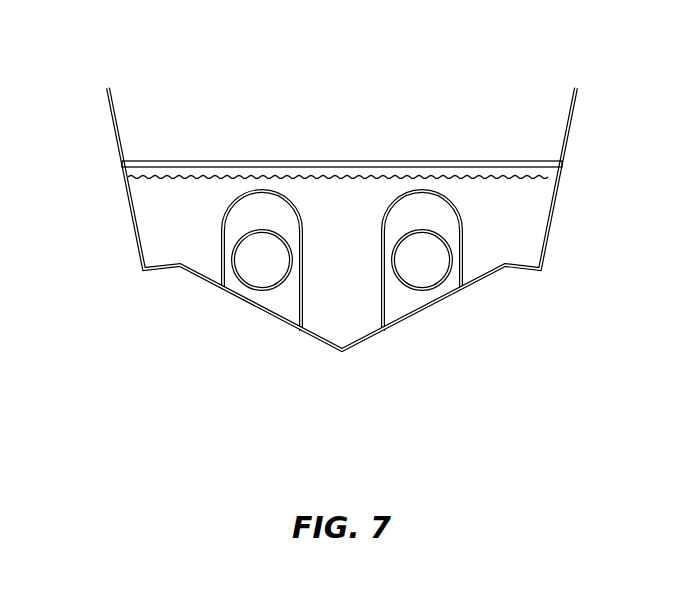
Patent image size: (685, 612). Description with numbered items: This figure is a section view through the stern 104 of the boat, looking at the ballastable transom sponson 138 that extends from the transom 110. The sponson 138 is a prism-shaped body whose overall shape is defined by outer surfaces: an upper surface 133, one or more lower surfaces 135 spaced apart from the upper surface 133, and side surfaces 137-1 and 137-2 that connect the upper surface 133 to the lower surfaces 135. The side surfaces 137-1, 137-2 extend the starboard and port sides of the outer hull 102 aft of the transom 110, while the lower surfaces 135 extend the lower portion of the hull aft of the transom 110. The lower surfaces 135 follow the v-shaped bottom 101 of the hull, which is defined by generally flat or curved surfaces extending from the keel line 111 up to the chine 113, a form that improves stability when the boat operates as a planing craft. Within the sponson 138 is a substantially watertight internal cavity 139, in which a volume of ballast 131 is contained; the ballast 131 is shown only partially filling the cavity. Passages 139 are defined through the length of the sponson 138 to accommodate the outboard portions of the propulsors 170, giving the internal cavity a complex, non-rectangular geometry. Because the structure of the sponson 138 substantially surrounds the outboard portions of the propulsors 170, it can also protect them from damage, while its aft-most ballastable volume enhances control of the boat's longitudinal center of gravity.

The v-shaped bottom 101 is at (365, 343).
The outer hull 102 is at (573, 123).
The stern 104 is at (131, 255).
The transom 110 is at (280, 305).
The keel line 111 is at (342, 353).
The chine 113 is at (543, 273).
The ballast 131 is at (155, 275).
The upper surface 133 is at (384, 160).
The lower surfaces 135 is at (193, 280).
The side surface 137-1 is at (553, 210).
The side surface 137-2 is at (128, 205).
The ballastable transom sponson 138 is at (172, 161).
The internal cavity 139 is at (256, 181).
The propulsors 170 is at (240, 283).